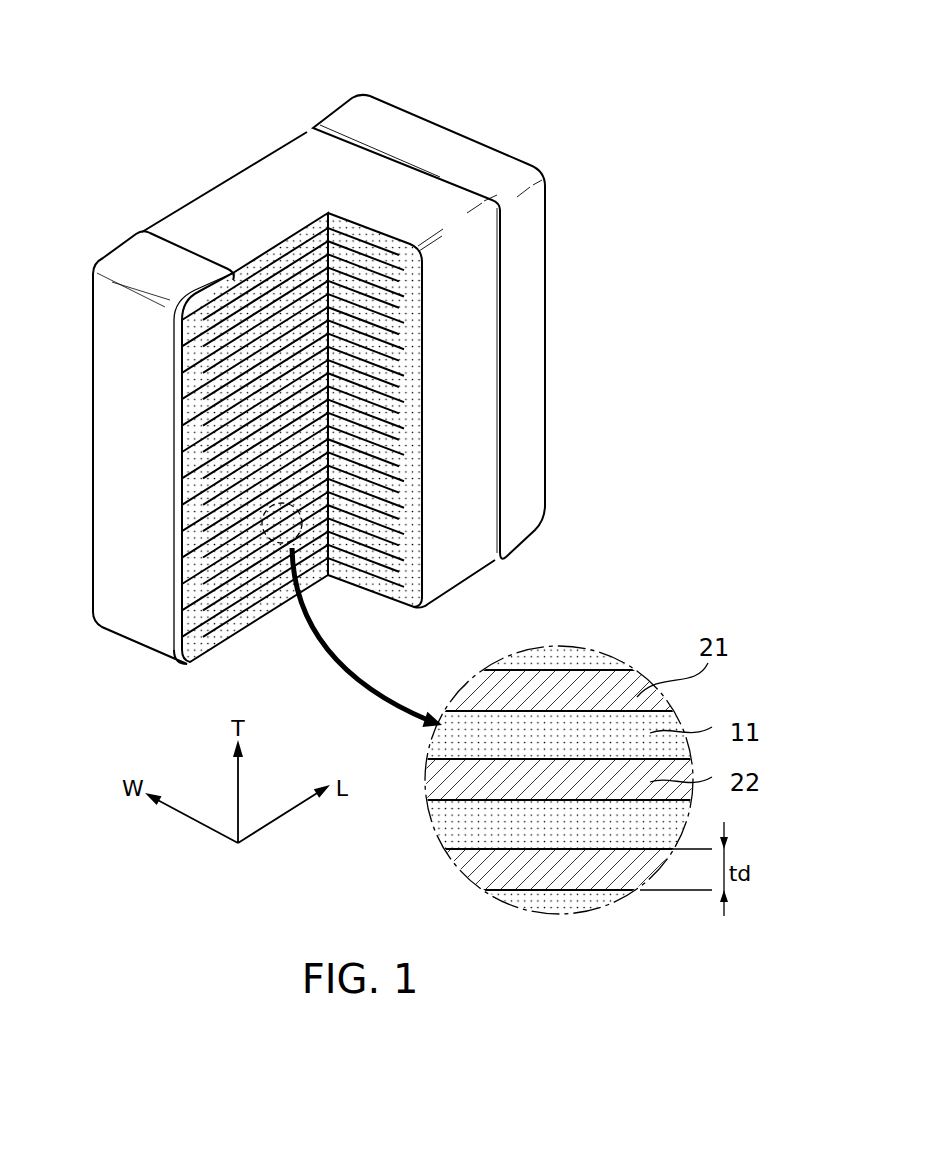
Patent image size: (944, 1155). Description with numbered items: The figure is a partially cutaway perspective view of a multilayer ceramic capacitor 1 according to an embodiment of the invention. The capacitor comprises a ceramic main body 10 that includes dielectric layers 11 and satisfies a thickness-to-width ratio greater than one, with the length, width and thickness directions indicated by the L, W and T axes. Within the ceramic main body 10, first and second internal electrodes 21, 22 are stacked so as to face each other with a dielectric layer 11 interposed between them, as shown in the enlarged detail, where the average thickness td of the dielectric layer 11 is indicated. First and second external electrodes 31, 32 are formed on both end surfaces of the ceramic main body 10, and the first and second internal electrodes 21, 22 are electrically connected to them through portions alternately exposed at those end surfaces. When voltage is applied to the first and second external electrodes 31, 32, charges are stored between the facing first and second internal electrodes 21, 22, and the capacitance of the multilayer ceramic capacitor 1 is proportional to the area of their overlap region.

The multilayer ceramic capacitor 1 is at (326, 29).
The ceramic main body 10 is at (233, 152).
The dielectric layer 11 is at (650, 733).
The first internal electrode 21 is at (637, 697).
The second internal electrode 22 is at (650, 782).
The first external electrode 31 is at (138, 258).
The second external electrode 32 is at (448, 148).